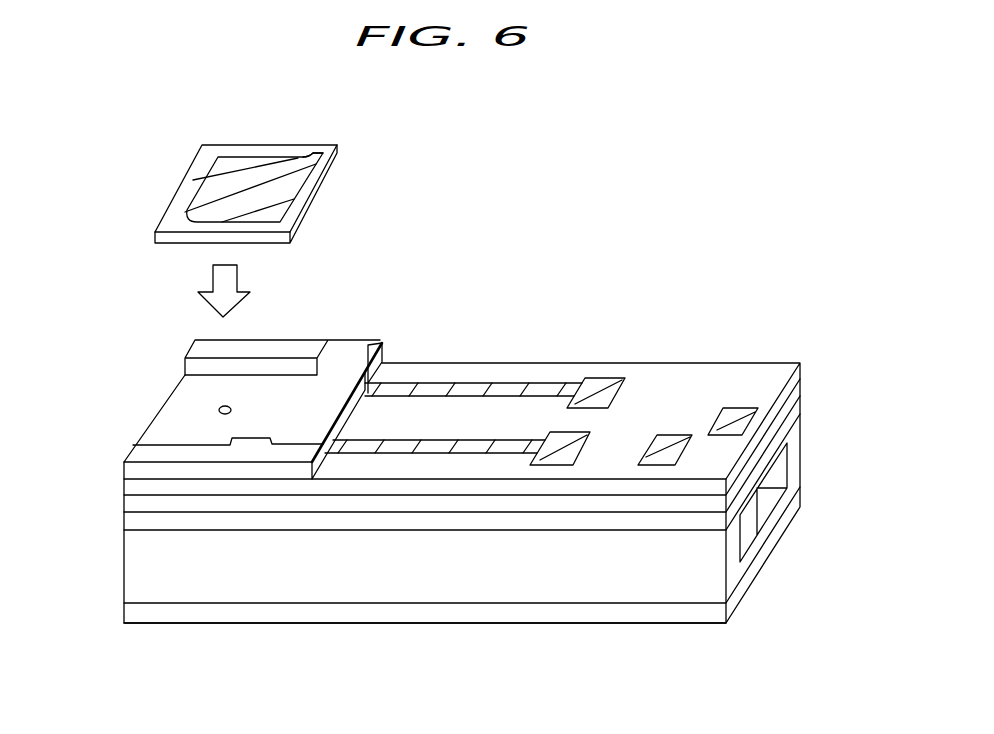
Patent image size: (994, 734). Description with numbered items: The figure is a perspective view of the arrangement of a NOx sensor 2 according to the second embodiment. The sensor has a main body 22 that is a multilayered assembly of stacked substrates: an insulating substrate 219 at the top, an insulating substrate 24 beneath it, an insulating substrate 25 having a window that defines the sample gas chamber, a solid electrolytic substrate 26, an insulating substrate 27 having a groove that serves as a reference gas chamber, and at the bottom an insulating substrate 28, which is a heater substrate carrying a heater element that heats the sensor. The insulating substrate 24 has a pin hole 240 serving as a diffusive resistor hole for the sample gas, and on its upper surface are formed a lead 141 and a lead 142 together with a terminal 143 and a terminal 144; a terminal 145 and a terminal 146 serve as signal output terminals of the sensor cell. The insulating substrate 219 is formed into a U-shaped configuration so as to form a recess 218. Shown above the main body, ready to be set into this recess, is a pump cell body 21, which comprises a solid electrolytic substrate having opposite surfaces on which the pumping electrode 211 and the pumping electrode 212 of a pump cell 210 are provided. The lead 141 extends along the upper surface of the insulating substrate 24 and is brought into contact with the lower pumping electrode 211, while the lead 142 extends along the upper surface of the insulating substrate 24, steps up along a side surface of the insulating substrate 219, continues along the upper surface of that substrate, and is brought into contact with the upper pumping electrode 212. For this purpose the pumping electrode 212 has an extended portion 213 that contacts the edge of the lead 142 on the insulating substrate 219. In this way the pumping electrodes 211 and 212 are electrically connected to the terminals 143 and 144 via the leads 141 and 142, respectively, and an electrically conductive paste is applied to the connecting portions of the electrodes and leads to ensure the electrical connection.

The NOx sensor 2 is at (519, 236).
The pump cell body 21 is at (176, 160).
The pump cell 210 is at (168, 221).
The pumping electrode 211 is at (250, 247).
The pumping electrode 212 is at (267, 192).
The extended portion 213 is at (326, 157).
The recess 218 is at (282, 354).
The insulating substrate 219 is at (372, 350).
The main body 22 is at (108, 483).
The pin hole 240 is at (218, 409).
The insulating substrate 24 is at (178, 487).
The insulating substrate 25 is at (225, 507).
The solid electrolytic substrate 26 is at (288, 523).
The insulating substrate 27 is at (618, 578).
The insulating substrate 28 is at (698, 615).
The lead 141 is at (406, 442).
The lead 142 is at (521, 392).
The terminal 143 is at (597, 437).
The terminal 144 is at (593, 392).
The terminal 145 is at (743, 412).
The terminal 146 is at (670, 447).